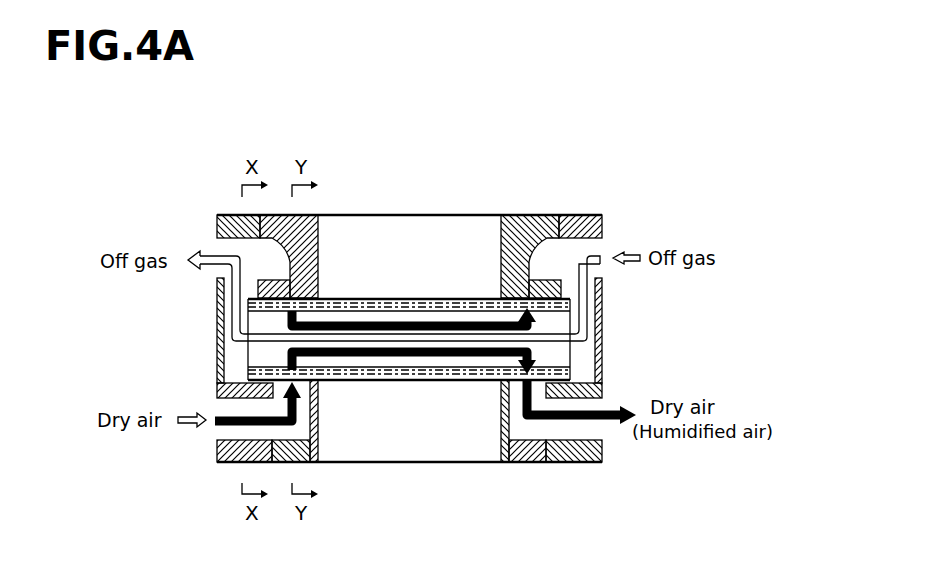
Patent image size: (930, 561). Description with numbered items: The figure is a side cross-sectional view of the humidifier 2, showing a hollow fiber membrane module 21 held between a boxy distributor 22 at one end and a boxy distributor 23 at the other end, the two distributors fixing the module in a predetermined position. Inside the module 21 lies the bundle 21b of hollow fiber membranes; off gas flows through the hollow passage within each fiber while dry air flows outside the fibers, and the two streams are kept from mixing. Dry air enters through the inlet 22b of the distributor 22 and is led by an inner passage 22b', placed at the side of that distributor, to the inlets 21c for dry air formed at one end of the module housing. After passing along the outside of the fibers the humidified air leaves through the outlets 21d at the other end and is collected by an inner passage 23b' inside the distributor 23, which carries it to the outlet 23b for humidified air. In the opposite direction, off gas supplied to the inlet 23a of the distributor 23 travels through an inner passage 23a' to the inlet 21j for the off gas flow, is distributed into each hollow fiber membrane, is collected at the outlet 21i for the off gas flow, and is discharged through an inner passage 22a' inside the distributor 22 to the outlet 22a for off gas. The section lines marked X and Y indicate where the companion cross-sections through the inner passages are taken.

The humidifier 2 is at (613, 207).
The hollow fiber membrane module 21 is at (394, 395).
The bundle of hollow fiber membranes 21b is at (470, 299).
The inlet for dry air 21c is at (318, 258).
The outlet for humidified air 21d is at (577, 215).
The outlet for off gas flow 21i is at (575, 358).
The inlet for off gas flow 21j is at (247, 357).
The distributor at one end 22 is at (228, 465).
The outlet for off gas 22a is at (202, 228).
The inner passage 22a' is at (184, 330).
The inlet for dry air 22b is at (226, 452).
The inner passage 22b' is at (342, 441).
The distributor at another end 23 is at (572, 463).
The inlet for off gas 23a is at (614, 227).
The inner passage 23a' is at (636, 330).
The outlet for humidified air 23b is at (590, 450).
The inner passage 23b' is at (468, 441).